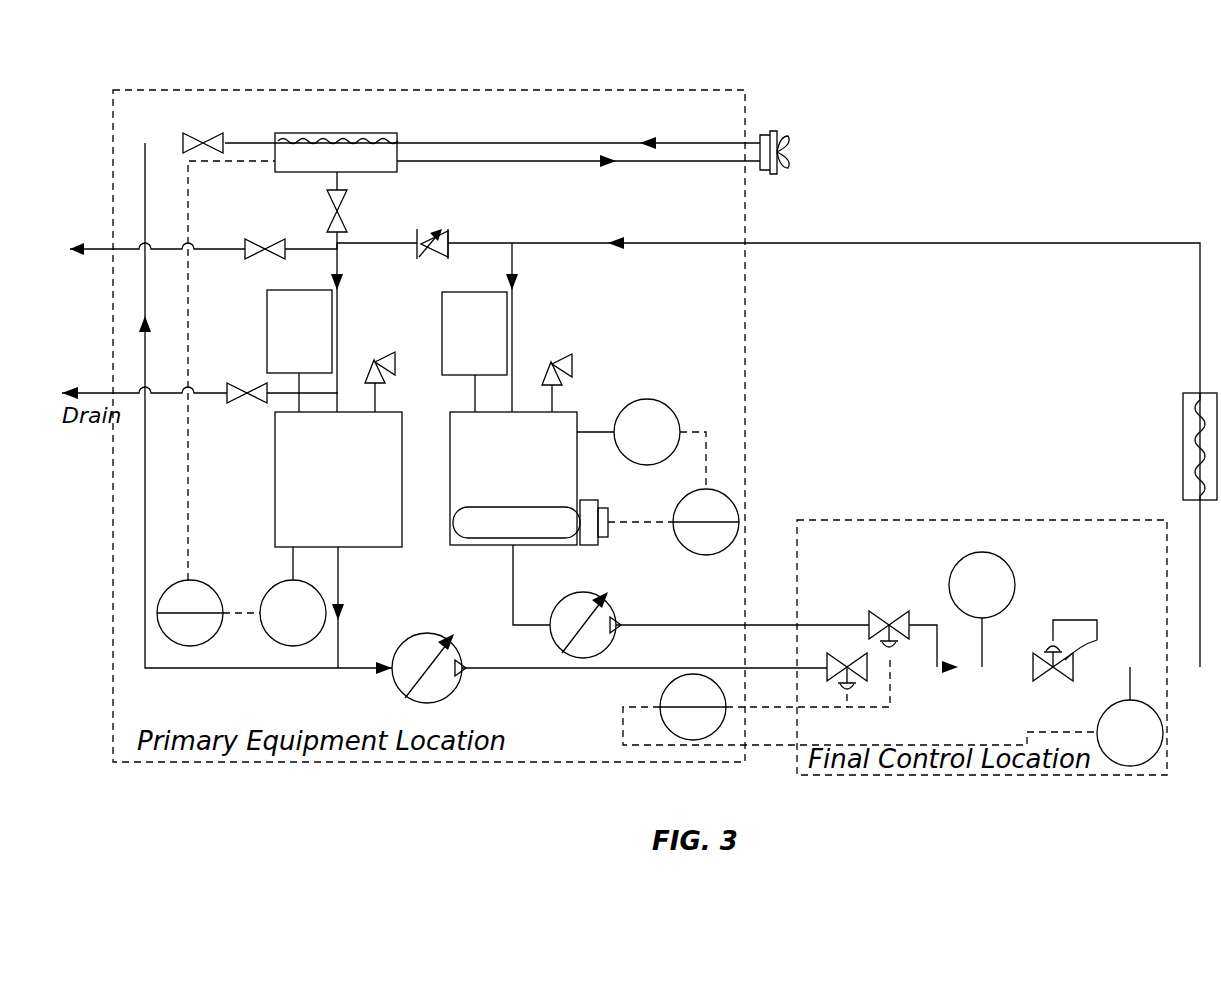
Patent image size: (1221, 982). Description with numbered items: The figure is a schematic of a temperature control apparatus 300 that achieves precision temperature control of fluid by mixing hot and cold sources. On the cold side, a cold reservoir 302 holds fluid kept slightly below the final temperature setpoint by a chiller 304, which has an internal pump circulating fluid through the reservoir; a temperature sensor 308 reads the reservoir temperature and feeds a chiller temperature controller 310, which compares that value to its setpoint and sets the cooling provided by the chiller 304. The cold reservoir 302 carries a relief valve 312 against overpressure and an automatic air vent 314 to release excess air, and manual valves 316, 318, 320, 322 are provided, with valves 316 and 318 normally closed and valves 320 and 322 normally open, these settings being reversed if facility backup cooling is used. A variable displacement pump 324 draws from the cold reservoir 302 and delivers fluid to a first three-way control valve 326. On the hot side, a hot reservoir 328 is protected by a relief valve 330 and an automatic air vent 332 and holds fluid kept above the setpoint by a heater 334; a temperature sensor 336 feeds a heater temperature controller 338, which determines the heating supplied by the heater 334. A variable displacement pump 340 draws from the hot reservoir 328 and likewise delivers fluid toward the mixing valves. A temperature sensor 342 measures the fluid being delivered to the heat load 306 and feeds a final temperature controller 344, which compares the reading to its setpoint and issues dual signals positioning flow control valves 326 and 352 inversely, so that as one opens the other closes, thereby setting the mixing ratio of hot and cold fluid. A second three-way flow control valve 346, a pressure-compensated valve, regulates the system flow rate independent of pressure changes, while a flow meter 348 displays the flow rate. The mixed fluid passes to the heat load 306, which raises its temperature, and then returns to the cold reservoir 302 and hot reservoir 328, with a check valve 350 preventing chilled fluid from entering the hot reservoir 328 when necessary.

The temperature control apparatus 300 is at (896, 182).
The cold reservoir 302 is at (275, 480).
The chiller 304 is at (302, 133).
The heat load 306 is at (1193, 393).
The temperature sensor 308 is at (293, 646).
The chiller temperature controller 310 is at (190, 646).
The relief valve 312 is at (380, 386).
The automatic air vent 314 is at (267, 324).
The manual valve 316 is at (258, 259).
The manual valve 318 is at (255, 403).
The manual valve 320 is at (183, 140).
The manual valve 322 is at (344, 204).
The variable displacement pump 324 is at (425, 634).
The first three-way control valve 326 is at (855, 674).
The hot reservoir 328 is at (486, 545).
The relief valve 330 is at (572, 364).
The automatic air vent 332 is at (512, 313).
The heater 334 is at (552, 540).
The temperature sensor 336 is at (656, 400).
The heater temperature controller 338 is at (730, 497).
The variable displacement pump 340 is at (582, 658).
The temperature sensor 342 is at (1128, 766).
The final temperature controller 344 is at (693, 742).
The second three-way flow control valve 346 is at (1097, 620).
The flow meter 348 is at (985, 552).
The check valve 350 is at (437, 232).
The flow control valve 352 is at (900, 647).